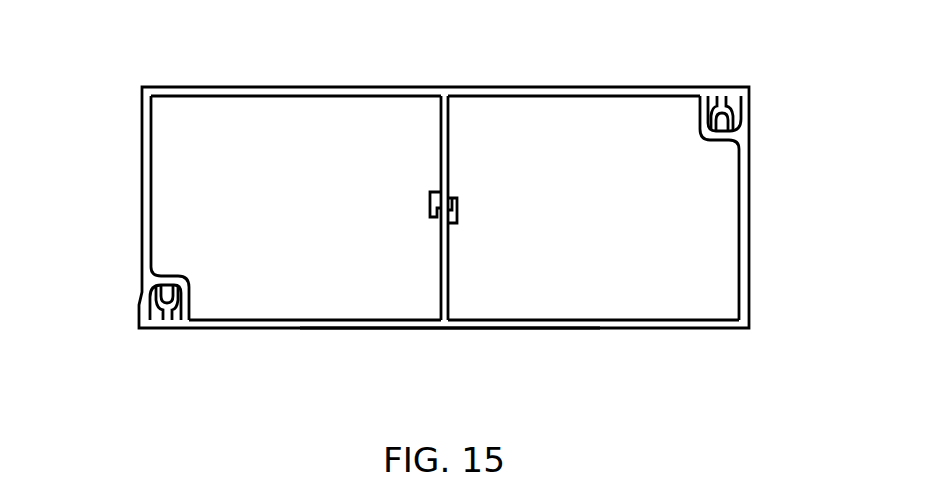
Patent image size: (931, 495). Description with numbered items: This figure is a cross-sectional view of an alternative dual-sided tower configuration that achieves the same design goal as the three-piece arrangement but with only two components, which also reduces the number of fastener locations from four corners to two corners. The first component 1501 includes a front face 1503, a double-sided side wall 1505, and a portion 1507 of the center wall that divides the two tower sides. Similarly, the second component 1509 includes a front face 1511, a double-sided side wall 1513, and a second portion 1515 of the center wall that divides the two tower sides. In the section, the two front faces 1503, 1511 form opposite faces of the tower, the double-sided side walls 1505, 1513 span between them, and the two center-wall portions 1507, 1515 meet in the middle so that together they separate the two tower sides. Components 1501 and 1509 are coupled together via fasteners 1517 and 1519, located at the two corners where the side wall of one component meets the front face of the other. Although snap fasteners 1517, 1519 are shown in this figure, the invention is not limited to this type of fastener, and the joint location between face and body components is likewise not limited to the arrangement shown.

The component 1501 is at (367, 73).
The front face 1503 is at (145, 190).
The double-sided side wall 1505 is at (548, 94).
The portion of the center wall 1507 is at (442, 172).
The component 1509 is at (500, 341).
The front face 1511 is at (746, 242).
The double-sided side wall 1513 is at (363, 322).
The second portion of the center wall 1515 is at (441, 274).
The fastener 1517 is at (139, 303).
The fastener 1519 is at (757, 118).